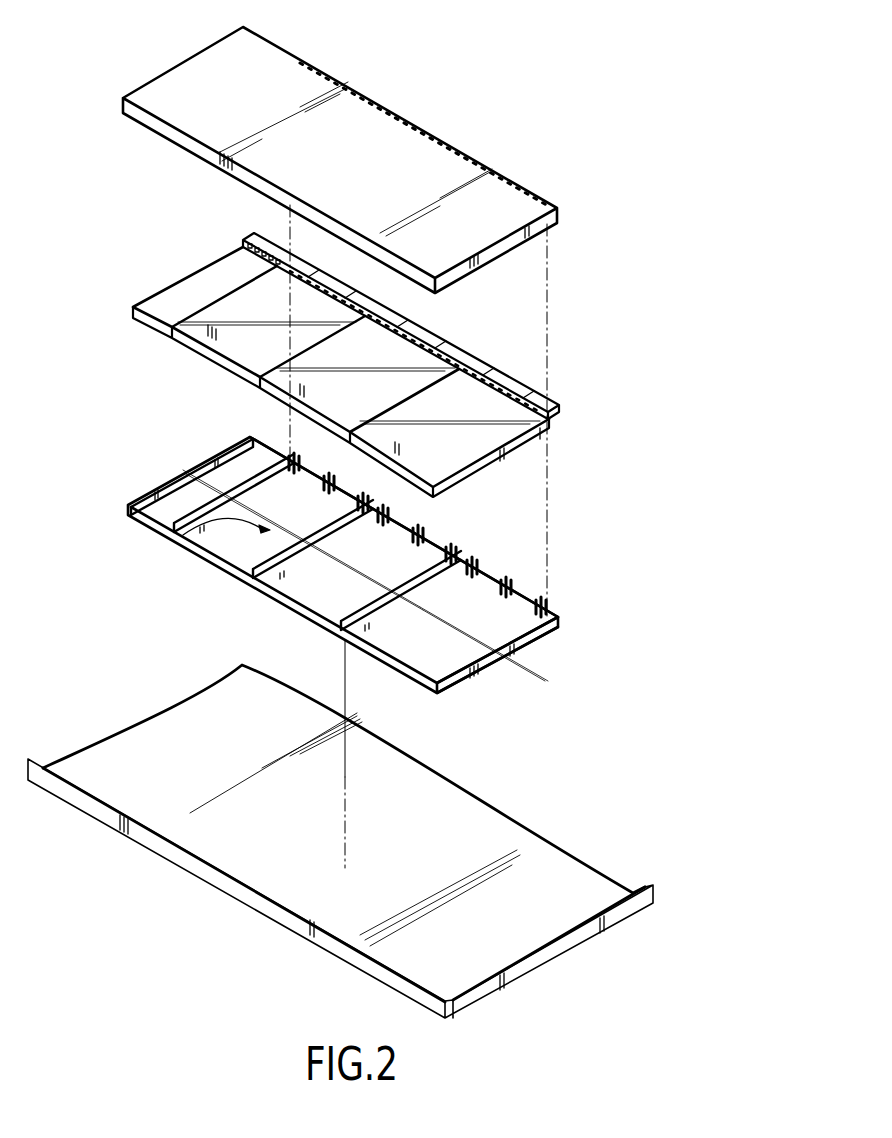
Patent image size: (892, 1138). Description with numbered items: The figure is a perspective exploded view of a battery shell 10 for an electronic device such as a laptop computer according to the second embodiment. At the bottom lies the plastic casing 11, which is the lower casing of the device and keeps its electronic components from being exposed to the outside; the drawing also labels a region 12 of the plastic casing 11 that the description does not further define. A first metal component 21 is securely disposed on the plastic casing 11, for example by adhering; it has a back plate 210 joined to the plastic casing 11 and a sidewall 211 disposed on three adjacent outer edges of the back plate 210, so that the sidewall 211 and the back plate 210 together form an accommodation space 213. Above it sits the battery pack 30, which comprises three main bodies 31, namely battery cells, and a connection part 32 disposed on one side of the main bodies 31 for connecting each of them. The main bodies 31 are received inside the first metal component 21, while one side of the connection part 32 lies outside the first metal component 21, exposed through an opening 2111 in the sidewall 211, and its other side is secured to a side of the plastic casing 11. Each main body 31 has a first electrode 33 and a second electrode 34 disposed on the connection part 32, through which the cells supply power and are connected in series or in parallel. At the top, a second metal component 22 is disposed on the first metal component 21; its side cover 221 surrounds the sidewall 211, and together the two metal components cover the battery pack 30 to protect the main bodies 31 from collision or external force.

The battery shell 10 is at (519, 53).
The plastic casing 11 is at (340, 841).
The curved top surface of base 12 is at (513, 893).
The first metal component 21 is at (369, 572).
The back plate 210 is at (197, 493).
The sidewall 211 is at (473, 670).
The opening 2111 is at (436, 546).
The accommodation space 213 is at (187, 536).
The second metal component 22 is at (375, 160).
The side cover 221 is at (217, 153).
The battery pack 30 is at (334, 365).
The main bodies 31 is at (242, 350).
The connection part 32 is at (461, 339).
The first electrode 33 is at (538, 394).
The second electrode 34 is at (496, 373).